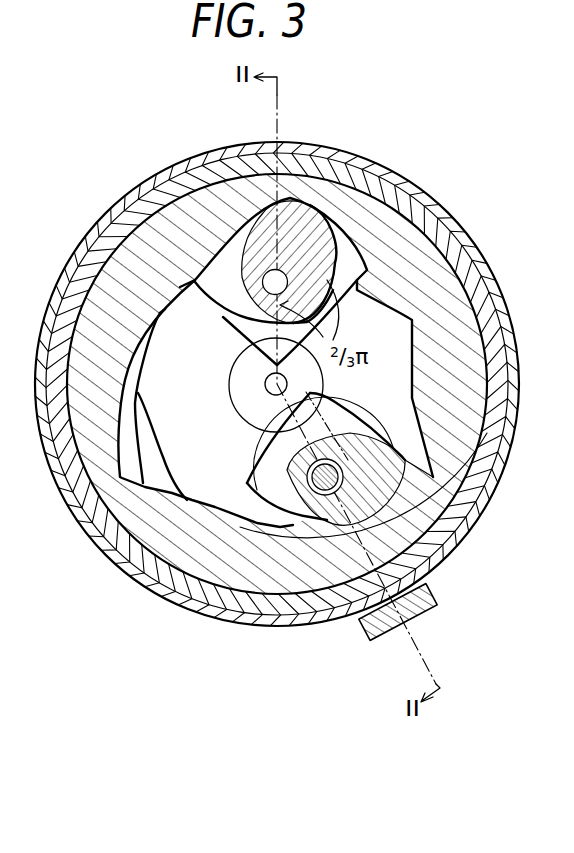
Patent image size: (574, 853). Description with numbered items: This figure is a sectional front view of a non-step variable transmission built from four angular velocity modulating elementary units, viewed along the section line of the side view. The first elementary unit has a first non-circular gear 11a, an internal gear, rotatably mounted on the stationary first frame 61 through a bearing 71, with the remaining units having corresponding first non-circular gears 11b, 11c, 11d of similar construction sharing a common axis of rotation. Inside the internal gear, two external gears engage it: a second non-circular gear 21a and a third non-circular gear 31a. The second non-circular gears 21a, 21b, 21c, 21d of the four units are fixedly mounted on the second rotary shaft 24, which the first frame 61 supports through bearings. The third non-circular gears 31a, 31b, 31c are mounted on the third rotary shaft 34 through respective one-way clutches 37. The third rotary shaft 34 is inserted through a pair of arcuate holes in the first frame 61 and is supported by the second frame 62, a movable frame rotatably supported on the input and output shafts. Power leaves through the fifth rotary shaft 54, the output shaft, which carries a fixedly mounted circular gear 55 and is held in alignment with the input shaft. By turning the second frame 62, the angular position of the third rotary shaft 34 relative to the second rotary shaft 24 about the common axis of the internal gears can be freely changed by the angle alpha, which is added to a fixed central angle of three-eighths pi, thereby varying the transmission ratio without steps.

The first non-circular gear 11a is at (137, 230).
The first non-circular gear 11b is at (133, 360).
The first non-circular gear 11c is at (143, 420).
The first non-circular gear 11d is at (177, 476).
The second non-circular gear 21a is at (335, 285).
The second non-circular gear 21b is at (208, 290).
The second non-circular gear 21c is at (247, 331).
The second non-circular gear 21d is at (336, 298).
The second rotary shaft 24 is at (260, 258).
The third non-circular gear 31a is at (395, 437).
The third non-circular gear 31b is at (358, 423).
The third non-circular gear 31c is at (262, 468).
The third rotary shaft 34 is at (378, 440).
The one-way clutch 37 is at (312, 528).
The fifth rotary shaft 54 is at (265, 383).
The circular gear 55 is at (248, 398).
The first frame 61 is at (370, 163).
The second frame 62 is at (433, 592).
The bearing 71 is at (428, 222).